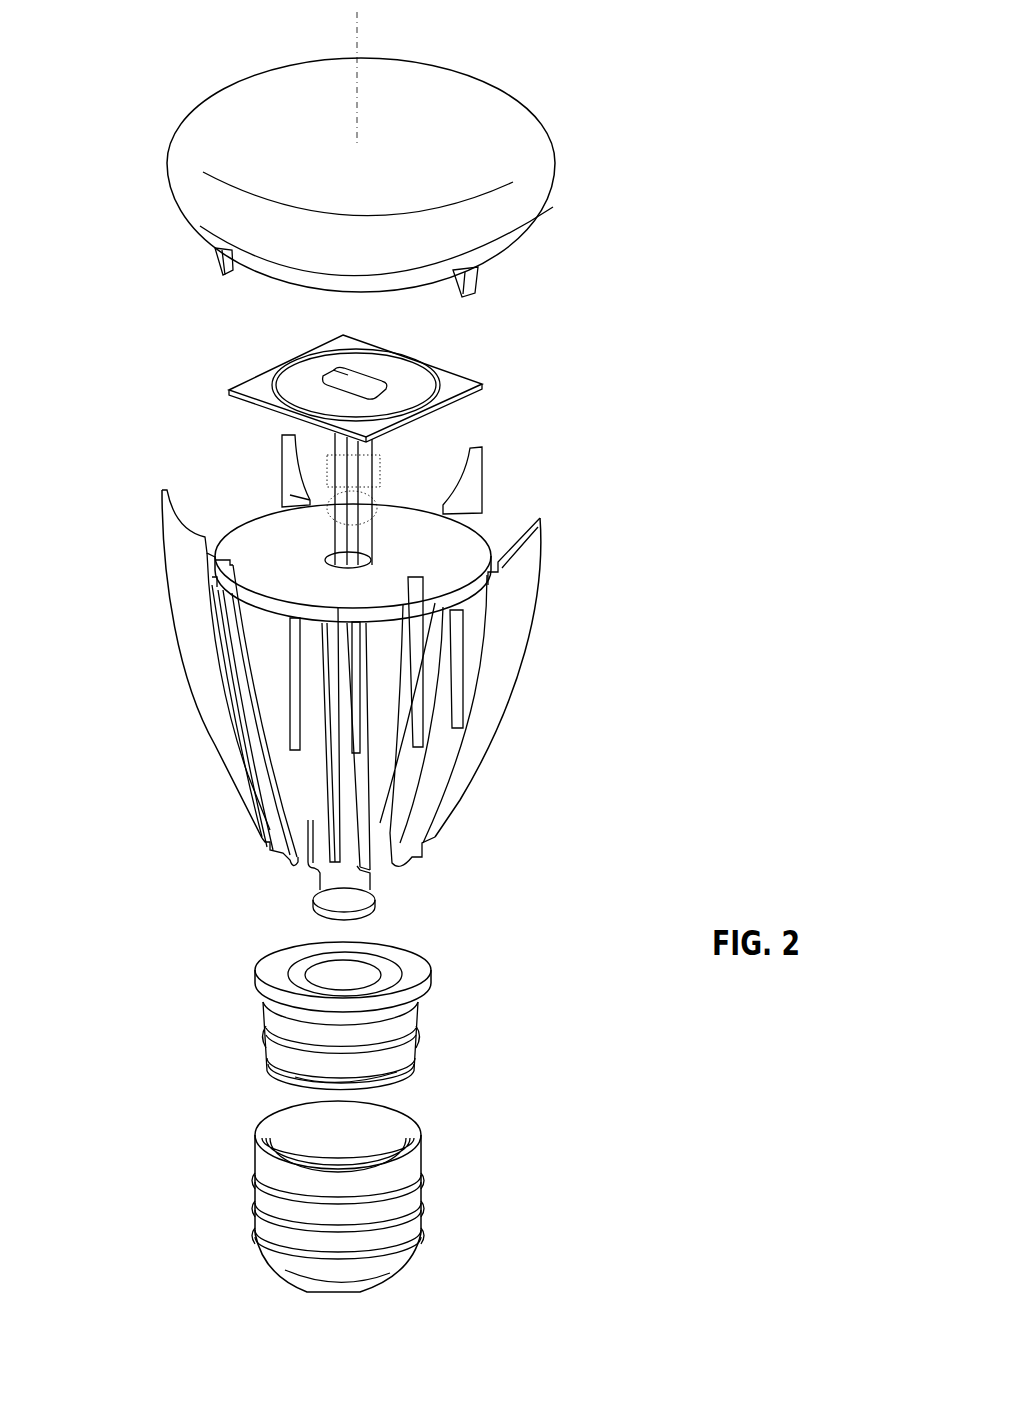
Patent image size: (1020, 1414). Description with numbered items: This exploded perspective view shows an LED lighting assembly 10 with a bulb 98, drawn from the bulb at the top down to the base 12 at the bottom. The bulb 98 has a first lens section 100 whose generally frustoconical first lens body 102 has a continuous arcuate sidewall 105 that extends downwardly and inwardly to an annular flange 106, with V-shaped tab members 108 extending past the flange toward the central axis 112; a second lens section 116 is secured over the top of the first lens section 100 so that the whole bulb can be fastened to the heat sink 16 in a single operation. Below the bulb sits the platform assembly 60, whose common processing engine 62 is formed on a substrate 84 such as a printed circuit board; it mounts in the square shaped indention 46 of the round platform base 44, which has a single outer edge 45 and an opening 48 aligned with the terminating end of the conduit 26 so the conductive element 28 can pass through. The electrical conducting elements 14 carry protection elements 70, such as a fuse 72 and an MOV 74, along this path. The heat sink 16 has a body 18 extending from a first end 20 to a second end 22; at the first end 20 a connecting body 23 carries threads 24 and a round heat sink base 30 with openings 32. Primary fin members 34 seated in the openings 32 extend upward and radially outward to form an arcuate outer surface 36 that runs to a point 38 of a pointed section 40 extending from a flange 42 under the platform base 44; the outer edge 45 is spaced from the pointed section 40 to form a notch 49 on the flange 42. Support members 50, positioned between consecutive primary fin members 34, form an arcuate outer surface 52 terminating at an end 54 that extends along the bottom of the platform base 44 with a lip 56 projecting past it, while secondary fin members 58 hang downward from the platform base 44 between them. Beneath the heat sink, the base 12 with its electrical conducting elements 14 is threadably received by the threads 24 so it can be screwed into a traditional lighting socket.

The LED lighting assembly 10 is at (673, 165).
The base 12 is at (407, 1197).
The electrical conducting elements 14 is at (350, 1295).
The heat sink 16 is at (547, 754).
The body 18 is at (550, 621).
The first end 20 is at (550, 823).
The second end 22 is at (537, 491).
The connecting body 23 is at (407, 1053).
The threads 24 is at (397, 1072).
The conduit 26 is at (357, 892).
The conductive element 28 is at (374, 445).
The heat sink base 30 is at (420, 975).
The openings 32 is at (273, 973).
The primary fin members 34 is at (522, 590).
The arcuate outer surface 36 is at (520, 678).
The point 38 is at (542, 522).
The pointed section 40 is at (520, 570).
The flange 42 is at (483, 533).
The platform base 44 is at (472, 545).
The outer edge 45 is at (288, 610).
The square shaped indention 46 is at (260, 548).
The opening 48 is at (377, 560).
The notch 49 is at (212, 543).
The support members 50 is at (320, 773).
The arcuate outer surface 52 is at (320, 717).
The end 54 is at (325, 623).
The lip 56 is at (463, 610).
The secondary fin members 58 is at (360, 620).
The platform assembly 60 is at (465, 350).
The common processing engine 62 is at (333, 375).
The protection elements 70 is at (316, 431).
The fuse 72 is at (383, 465).
The MOV 74 is at (377, 502).
The substrate 84 is at (300, 393).
The bulb 98 is at (240, 78).
The first lens section 100 is at (552, 222).
The first lens body 102 is at (495, 230).
The arcuate sidewall 105 is at (203, 213).
The annular flange 106 is at (380, 281).
The tab member 108 is at (480, 292).
The central axis 112 is at (358, 20).
The second lens section 116 is at (497, 108).